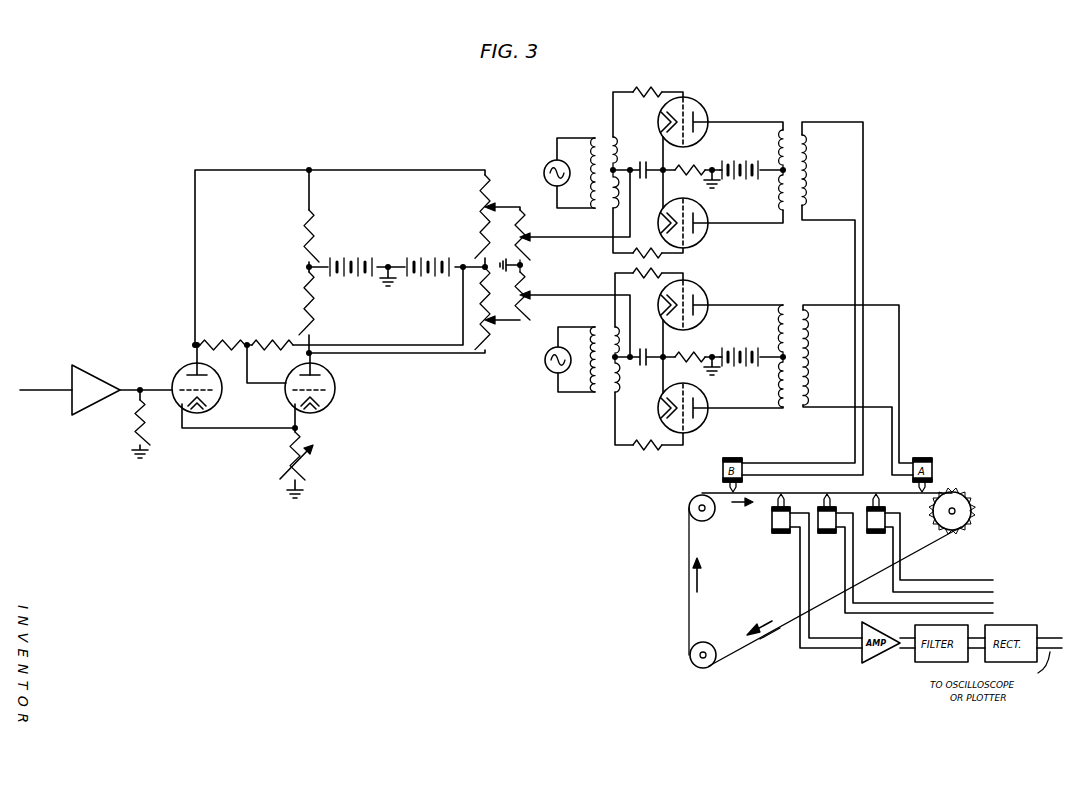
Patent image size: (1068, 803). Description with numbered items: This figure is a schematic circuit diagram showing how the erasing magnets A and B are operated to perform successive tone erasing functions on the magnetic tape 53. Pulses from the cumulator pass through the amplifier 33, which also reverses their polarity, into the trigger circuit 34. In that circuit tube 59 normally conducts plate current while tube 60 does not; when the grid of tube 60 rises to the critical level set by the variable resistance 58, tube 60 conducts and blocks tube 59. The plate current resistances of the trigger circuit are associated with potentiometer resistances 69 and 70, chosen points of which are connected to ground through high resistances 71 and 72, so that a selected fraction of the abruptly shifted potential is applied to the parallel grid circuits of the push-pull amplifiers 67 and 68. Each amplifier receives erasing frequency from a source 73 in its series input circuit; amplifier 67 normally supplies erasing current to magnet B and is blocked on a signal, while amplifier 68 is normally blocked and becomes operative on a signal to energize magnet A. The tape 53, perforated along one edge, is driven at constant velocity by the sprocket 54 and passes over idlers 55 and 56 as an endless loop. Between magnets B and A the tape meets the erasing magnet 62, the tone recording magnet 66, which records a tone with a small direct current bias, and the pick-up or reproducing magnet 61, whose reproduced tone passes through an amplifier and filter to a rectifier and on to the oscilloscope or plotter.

The amplifier 33 is at (86, 380).
The trigger circuit 34 is at (244, 161).
The magnetic tape 53 is at (744, 645).
The sprocket 54 is at (974, 514).
The idler 55 is at (696, 665).
The idler 56 is at (690, 510).
The variable resistance 58 is at (310, 466).
The trigger tube 59 is at (330, 382).
The trigger tube 60 is at (180, 375).
The pick-up or reproducing magnet 61 is at (776, 534).
The erasing magnet 62 is at (816, 535).
The tone recording magnet 66 is at (864, 535).
The push-pull amplifier 67 is at (750, 150).
The push-pull amplifier 68 is at (750, 337).
The potentiometer resistance 69 is at (478, 203).
The potentiometer resistance 70 is at (478, 304).
The high resistance 71 is at (527, 247).
The high resistance 72 is at (527, 279).
The alternating source 73 is at (552, 161).